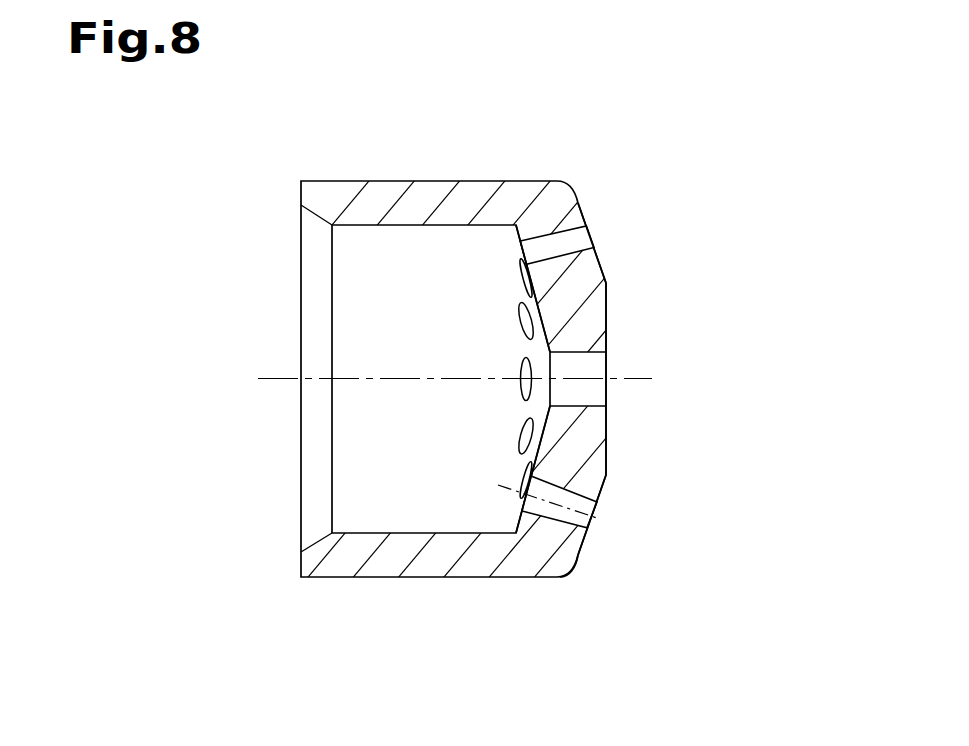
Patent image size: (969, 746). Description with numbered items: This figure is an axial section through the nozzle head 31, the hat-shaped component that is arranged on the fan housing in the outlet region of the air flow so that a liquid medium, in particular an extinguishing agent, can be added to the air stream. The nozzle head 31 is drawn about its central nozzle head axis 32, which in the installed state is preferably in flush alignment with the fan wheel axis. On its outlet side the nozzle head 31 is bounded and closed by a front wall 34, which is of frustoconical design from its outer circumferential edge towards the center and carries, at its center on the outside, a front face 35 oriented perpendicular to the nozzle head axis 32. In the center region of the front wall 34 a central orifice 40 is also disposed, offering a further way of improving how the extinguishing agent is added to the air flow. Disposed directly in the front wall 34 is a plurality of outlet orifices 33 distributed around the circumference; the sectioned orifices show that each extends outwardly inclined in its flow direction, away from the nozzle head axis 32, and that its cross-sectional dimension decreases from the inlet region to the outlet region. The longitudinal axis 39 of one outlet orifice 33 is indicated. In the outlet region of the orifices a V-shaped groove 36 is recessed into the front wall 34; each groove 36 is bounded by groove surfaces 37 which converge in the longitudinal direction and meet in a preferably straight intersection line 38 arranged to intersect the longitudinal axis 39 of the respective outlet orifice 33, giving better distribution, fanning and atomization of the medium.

The nozzle head 31 is at (235, 173).
The nozzle head axis 32 is at (270, 378).
The outlet orifices 33 is at (566, 245).
The front wall 34 is at (607, 300).
The front face 35 is at (606, 336).
The V-shaped groove 36 is at (590, 553).
The groove surfaces 37 is at (573, 207).
The intersection line 38 is at (598, 273).
The longitudinal axis 39 is at (596, 519).
The central opening 40 is at (583, 406).